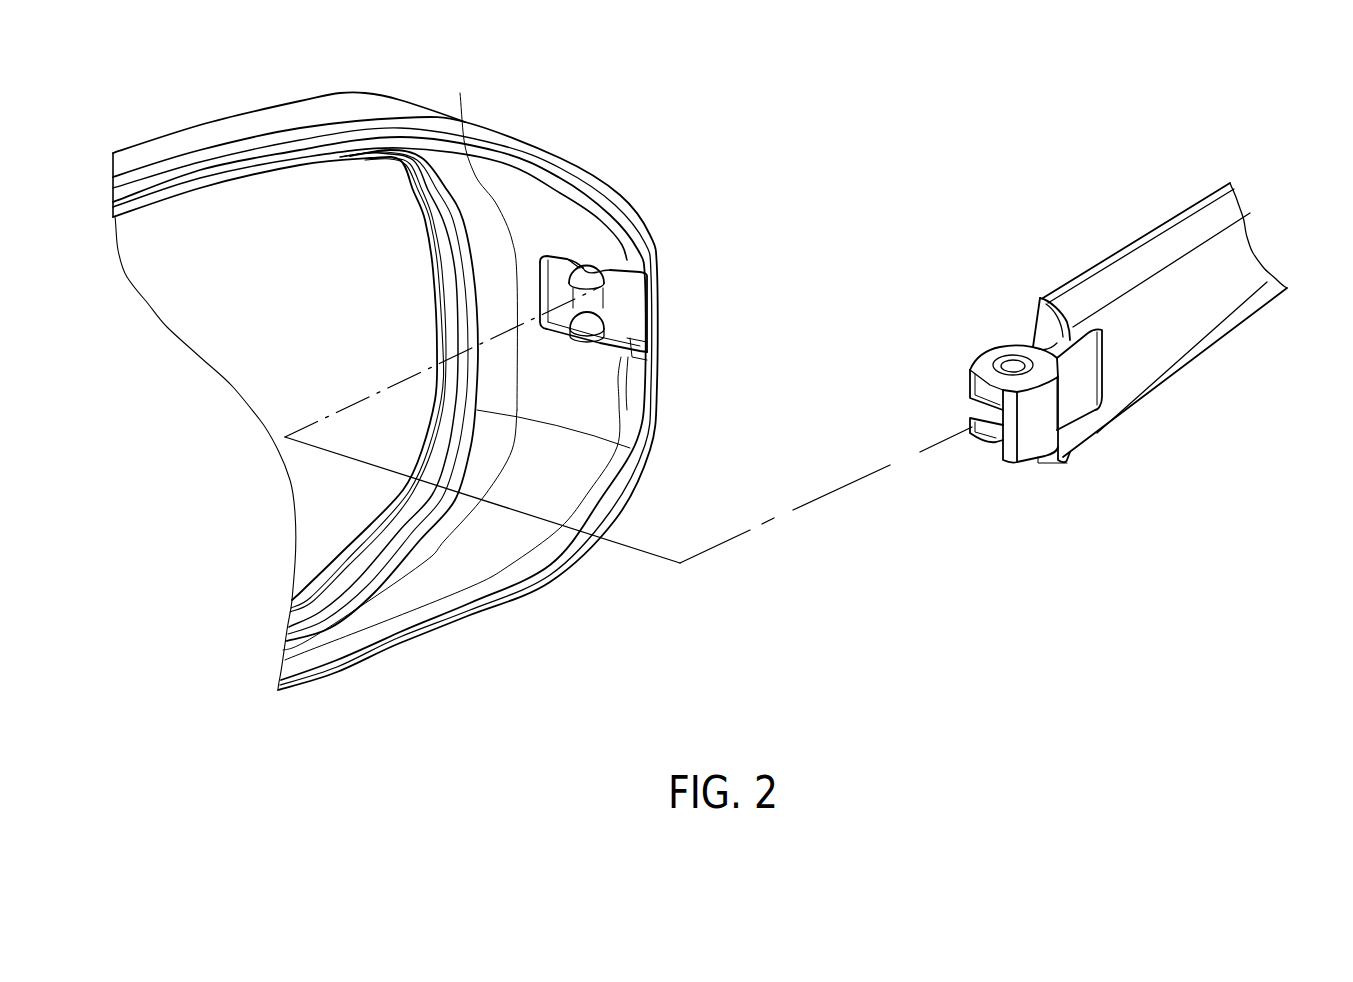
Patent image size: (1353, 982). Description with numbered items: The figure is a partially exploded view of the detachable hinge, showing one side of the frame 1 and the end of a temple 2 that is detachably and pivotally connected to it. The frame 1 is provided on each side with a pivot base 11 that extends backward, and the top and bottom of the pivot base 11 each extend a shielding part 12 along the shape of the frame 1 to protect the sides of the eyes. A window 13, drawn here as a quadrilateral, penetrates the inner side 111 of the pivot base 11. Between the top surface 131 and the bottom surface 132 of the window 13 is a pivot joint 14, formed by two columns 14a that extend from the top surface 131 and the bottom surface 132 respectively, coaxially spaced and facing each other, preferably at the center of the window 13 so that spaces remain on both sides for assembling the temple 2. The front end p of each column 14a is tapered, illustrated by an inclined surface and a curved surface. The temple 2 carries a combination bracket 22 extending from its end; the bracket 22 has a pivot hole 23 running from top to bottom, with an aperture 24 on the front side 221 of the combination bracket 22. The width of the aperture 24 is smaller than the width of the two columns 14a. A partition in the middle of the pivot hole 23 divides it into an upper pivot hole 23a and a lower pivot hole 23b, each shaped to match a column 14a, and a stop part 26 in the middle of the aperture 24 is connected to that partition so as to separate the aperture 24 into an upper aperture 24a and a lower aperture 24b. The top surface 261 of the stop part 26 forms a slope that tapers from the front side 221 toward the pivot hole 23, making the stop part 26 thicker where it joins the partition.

The frame 1 is at (185, 137).
The front end p is at (628, 308).
The shielding part 12 is at (503, 178).
The top surface 131 is at (562, 275).
The window 13 is at (580, 247).
The inner side 111 is at (580, 258).
The pivot base 11 is at (633, 260).
The column 14a is at (593, 268).
The pivot joint 14 is at (704, 311).
The bottom surface 132 is at (630, 450).
The temple 2 is at (1165, 237).
The combination bracket 22 is at (1033, 340).
The top surface 261 is at (995, 400).
The front side 221 is at (970, 390).
The upper aperture 24a is at (973, 400).
The lower aperture 24b is at (990, 420).
The aperture 24 is at (901, 414).
The upper pivot hole 23a is at (1040, 368).
The lower pivot hole 23b is at (1000, 443).
The pivot hole 23 is at (1125, 427).
The stop part 26 is at (929, 417).